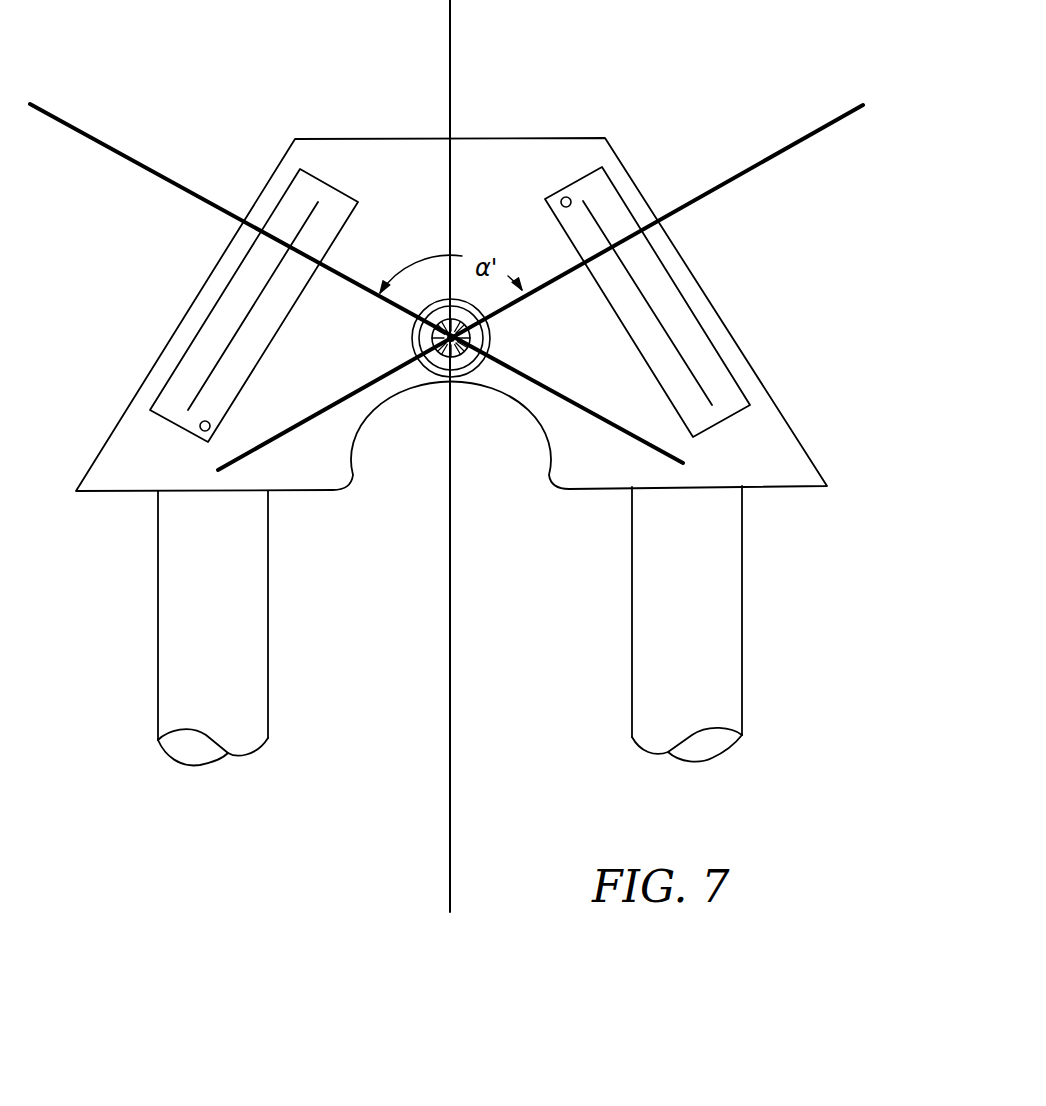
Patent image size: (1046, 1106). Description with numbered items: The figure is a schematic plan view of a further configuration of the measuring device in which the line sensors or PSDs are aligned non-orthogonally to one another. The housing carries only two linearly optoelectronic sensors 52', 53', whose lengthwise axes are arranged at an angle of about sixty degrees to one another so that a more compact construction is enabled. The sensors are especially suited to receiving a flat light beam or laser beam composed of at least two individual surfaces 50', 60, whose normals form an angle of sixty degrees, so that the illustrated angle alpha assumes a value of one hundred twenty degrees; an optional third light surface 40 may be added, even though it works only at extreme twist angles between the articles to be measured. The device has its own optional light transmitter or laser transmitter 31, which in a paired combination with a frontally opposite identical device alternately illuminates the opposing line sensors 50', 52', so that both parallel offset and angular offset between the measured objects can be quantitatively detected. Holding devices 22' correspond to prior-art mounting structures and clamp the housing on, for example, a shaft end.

The third light surface 40 is at (452, 32).
The individual surface 60 is at (117, 153).
The individual surface 50' is at (540, 287).
The linearly optoelectronic sensor 52' is at (238, 305).
The linearly optoelectronic sensor 53' is at (678, 302).
The light transmitter or laser transmitter 31 is at (477, 332).
The holding devices 22' is at (450, 625).